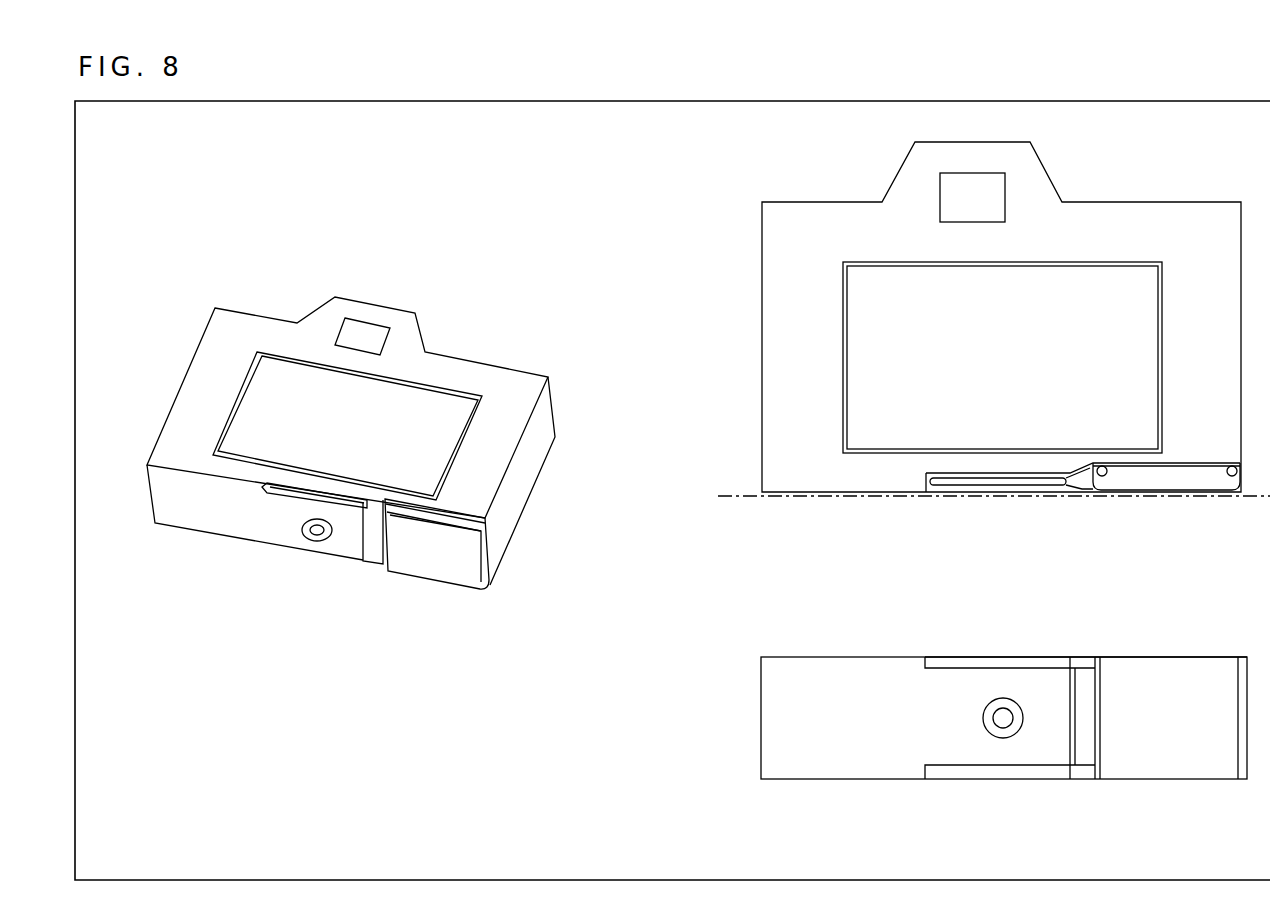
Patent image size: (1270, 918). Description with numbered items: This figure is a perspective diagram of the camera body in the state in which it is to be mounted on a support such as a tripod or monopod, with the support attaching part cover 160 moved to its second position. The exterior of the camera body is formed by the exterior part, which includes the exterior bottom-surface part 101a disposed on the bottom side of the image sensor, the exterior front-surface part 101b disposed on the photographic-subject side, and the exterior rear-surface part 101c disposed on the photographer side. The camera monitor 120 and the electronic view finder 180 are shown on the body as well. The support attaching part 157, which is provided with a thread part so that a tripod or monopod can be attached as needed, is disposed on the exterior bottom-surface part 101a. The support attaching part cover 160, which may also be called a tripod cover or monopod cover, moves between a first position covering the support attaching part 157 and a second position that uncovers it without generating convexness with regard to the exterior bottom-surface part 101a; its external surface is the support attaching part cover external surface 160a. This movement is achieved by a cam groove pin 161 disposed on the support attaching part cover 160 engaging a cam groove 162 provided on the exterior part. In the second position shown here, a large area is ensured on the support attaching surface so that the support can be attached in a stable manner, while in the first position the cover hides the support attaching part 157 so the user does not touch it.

The exterior bottom-surface part 101a is at (198, 520).
The exterior front-surface part 101b is at (798, 779).
The exterior rear-surface part 101c is at (210, 358).
The camera monitor 120 is at (408, 400).
The support attaching part 157 is at (312, 538).
The support attaching part cover 160 is at (408, 560).
The support attaching part cover external surface 160a is at (457, 560).
The cam groove pin 161 is at (1231, 464).
The cam groove 162 is at (340, 505).
The electronic view finder 180 is at (368, 330).